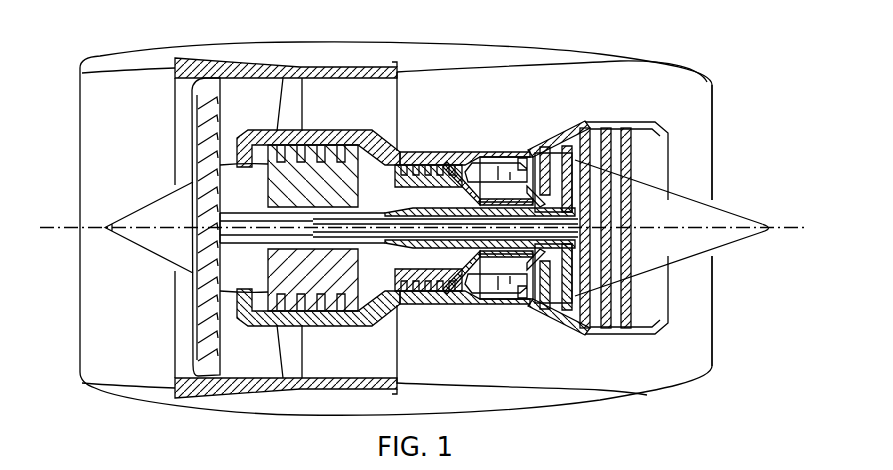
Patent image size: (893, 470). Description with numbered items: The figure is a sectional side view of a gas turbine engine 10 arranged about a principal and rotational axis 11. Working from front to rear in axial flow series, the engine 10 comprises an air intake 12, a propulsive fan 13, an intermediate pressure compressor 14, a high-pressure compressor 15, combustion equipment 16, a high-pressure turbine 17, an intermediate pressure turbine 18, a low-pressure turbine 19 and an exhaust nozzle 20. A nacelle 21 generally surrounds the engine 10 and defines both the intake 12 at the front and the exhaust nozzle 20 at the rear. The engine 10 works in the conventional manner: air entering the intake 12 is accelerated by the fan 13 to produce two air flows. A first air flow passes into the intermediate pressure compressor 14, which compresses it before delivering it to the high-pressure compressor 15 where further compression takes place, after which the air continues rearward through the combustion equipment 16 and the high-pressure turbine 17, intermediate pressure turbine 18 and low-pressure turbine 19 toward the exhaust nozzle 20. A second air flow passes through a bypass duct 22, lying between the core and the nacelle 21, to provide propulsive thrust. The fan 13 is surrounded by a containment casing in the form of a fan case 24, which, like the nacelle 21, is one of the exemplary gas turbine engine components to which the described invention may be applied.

The gas turbine engine 10 is at (73, 115).
The principal and rotational axis 11 is at (72, 223).
The air intake 12 is at (125, 72).
The propulsive fan 13 is at (188, 332).
The intermediate pressure compressor 14 is at (302, 311).
The high-pressure compressor 15 is at (423, 167).
The combustion equipment 16 is at (487, 292).
The high-pressure turbine 17 is at (512, 298).
The intermediate pressure turbine 18 is at (554, 160).
The low-pressure turbine 19 is at (566, 312).
The exhaust nozzle 20 is at (716, 342).
The nacelle 21 is at (467, 60).
The bypass duct 22 is at (326, 113).
The fan case 24 is at (260, 72).